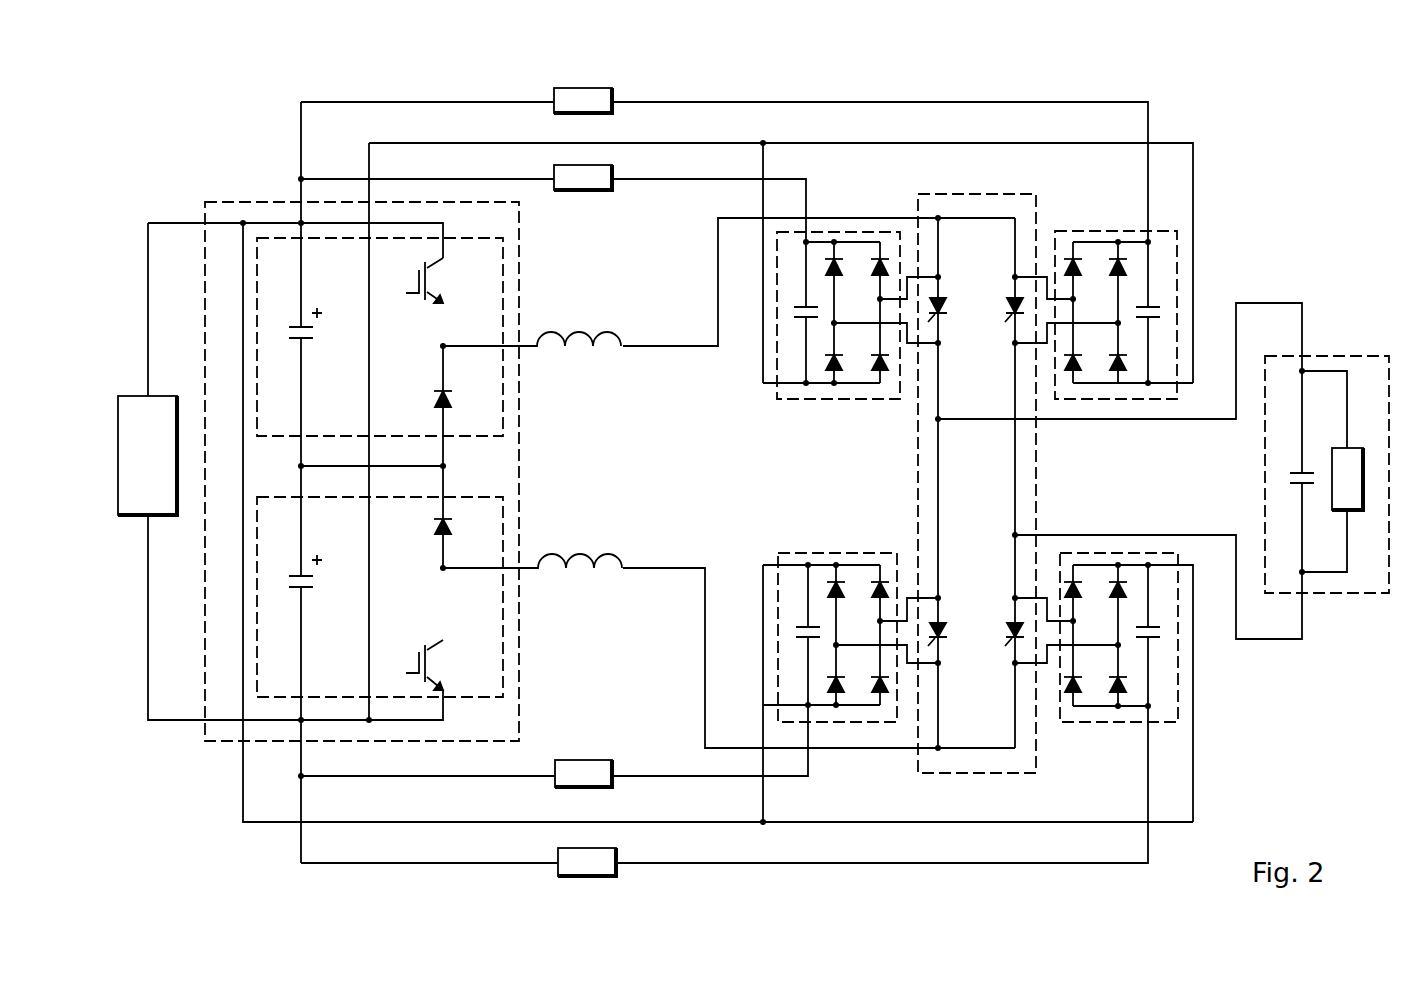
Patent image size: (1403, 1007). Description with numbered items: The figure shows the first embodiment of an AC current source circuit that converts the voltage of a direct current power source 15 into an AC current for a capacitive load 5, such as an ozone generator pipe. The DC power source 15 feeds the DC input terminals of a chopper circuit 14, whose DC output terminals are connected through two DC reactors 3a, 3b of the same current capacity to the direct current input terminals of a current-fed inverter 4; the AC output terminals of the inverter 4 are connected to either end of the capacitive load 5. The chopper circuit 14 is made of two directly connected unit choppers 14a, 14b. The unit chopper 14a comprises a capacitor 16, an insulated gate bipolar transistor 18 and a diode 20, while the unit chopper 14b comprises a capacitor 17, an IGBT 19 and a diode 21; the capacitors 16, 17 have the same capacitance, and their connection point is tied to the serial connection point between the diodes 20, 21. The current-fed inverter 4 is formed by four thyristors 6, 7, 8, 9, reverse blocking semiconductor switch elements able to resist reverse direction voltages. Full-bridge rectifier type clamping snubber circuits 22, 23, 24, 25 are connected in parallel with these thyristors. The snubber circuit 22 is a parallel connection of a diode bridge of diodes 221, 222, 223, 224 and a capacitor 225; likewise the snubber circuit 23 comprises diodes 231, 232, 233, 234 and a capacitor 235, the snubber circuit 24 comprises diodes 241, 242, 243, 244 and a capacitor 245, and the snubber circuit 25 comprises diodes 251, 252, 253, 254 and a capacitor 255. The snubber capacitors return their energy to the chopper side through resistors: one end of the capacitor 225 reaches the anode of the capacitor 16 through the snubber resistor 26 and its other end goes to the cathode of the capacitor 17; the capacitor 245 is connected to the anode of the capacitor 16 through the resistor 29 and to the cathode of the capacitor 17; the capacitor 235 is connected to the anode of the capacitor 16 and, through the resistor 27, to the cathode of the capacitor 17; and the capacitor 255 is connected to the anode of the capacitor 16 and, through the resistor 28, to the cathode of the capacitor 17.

The DC reactor 3a is at (580, 334).
The DC reactor 3b is at (580, 558).
The current-fed inverter 4 is at (957, 195).
The capacitive load 5 is at (1325, 356).
The thyristor 6 is at (944, 306).
The thyristor 7 is at (944, 628).
The thyristor 8 is at (1008, 312).
The thyristor 9 is at (1008, 636).
The chopper circuit 14 is at (521, 431).
The unit chopper 14a is at (505, 383).
The unit chopper 14b is at (505, 528).
The direct current power source 15 is at (168, 470).
The capacitor 16 is at (312, 340).
The capacitor 17 is at (312, 589).
The insulated gate bi-polar transistor 18 is at (441, 282).
The insulated gate bi-polar transistor 19 is at (441, 662).
The diode 20 is at (437, 400).
The diode 21 is at (438, 528).
The clamping snubber circuit 22 is at (777, 352).
The clamping snubber circuit 23 is at (778, 604).
The clamping snubber circuit 24 is at (1180, 250).
The clamping snubber circuit 25 is at (1180, 706).
The snubber resistor 26 is at (570, 192).
The resistor 27 is at (568, 760).
The resistor 28 is at (618, 851).
The resistor 29 is at (608, 88).
The diode 221 is at (840, 262).
The diode 222 is at (834, 372).
The diode 223 is at (882, 262).
The diode 224 is at (880, 372).
The capacitor 225 is at (798, 320).
The diode 231 is at (830, 585).
The diode 232 is at (840, 694).
The diode 233 is at (880, 585).
The diode 234 is at (885, 694).
The capacitor 235 is at (800, 626).
The diode 241 is at (1065, 268).
The diode 242 is at (1073, 372).
The diode 243 is at (1112, 268).
The diode 244 is at (1125, 370).
The capacitor 245 is at (1156, 306).
The diode 251 is at (1080, 585).
The diode 252 is at (1072, 690).
The diode 253 is at (1125, 585).
The diode 254 is at (1125, 692).
The capacitor 255 is at (1156, 638).